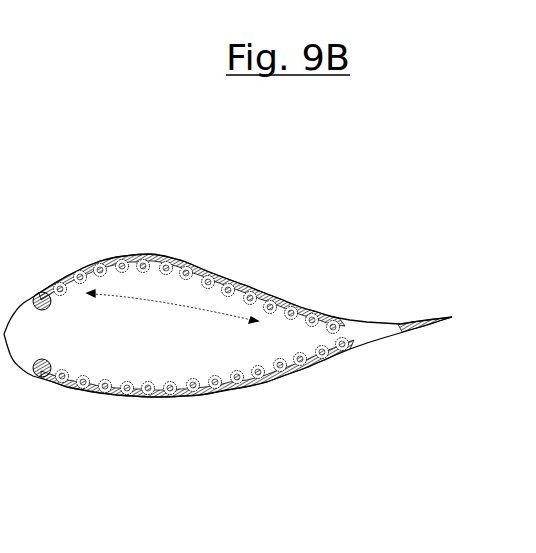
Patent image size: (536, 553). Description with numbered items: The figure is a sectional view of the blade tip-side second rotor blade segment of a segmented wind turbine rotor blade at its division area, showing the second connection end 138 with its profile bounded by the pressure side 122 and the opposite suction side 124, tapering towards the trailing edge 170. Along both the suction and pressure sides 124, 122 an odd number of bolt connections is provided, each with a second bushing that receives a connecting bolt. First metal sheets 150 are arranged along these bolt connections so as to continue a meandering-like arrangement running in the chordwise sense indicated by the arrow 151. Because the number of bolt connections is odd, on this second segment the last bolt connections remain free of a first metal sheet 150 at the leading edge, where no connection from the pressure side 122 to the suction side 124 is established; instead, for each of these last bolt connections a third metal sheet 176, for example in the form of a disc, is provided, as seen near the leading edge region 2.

The pressure side 122 is at (202, 248).
The suction side 124 is at (183, 392).
The second connection end 138 is at (125, 350).
The first metal sheet 150 is at (323, 318).
The chordwise direction 151 is at (172, 312).
The trailing edge 170 is at (420, 332).
The third metal sheet 176 is at (37, 293).
The leading edge region 2 is at (5, 342).